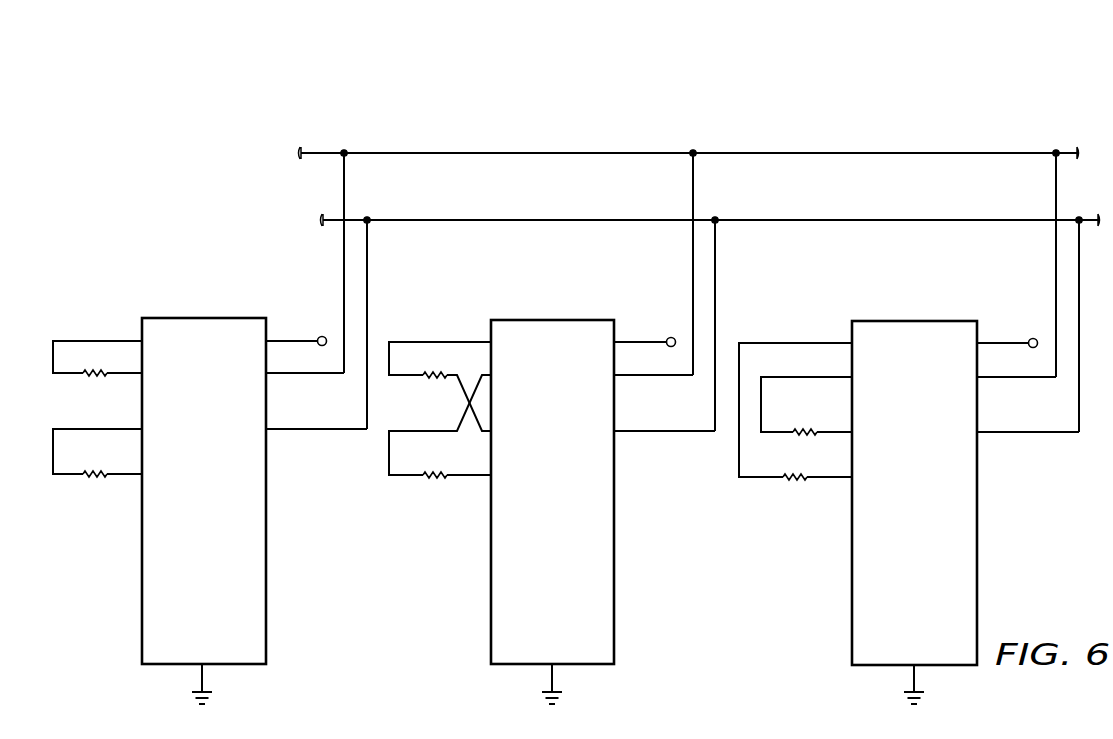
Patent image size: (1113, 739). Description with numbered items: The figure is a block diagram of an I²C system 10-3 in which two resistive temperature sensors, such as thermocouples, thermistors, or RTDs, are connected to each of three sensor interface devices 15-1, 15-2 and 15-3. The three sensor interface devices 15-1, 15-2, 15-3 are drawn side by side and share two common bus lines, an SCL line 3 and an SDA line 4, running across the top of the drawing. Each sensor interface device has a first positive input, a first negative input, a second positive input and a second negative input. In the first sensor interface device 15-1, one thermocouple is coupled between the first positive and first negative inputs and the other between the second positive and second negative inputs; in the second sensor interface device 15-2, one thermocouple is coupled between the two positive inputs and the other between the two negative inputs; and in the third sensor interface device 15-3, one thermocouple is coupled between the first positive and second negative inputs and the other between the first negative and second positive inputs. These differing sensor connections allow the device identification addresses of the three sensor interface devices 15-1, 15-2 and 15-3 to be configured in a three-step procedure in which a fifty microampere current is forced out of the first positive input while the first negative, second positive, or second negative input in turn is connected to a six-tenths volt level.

The I²C system 10-3 is at (381, 96).
The SCL bus line 3 is at (985, 152).
The SDA bus line 4 is at (960, 219).
The sensor interface device 15-1 is at (190, 317).
The sensor interface device 15-2 is at (540, 319).
The sensor interface device 15-3 is at (926, 319).